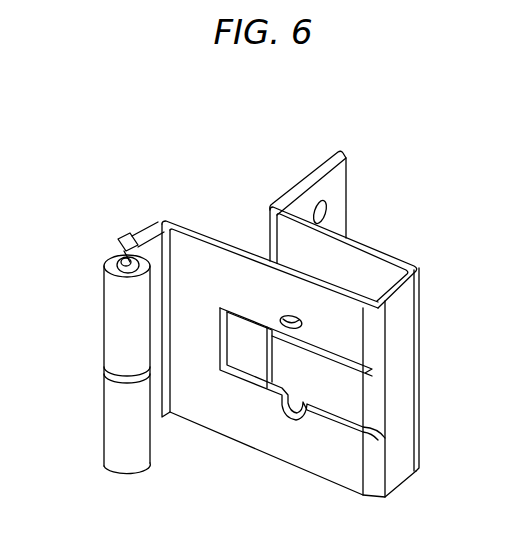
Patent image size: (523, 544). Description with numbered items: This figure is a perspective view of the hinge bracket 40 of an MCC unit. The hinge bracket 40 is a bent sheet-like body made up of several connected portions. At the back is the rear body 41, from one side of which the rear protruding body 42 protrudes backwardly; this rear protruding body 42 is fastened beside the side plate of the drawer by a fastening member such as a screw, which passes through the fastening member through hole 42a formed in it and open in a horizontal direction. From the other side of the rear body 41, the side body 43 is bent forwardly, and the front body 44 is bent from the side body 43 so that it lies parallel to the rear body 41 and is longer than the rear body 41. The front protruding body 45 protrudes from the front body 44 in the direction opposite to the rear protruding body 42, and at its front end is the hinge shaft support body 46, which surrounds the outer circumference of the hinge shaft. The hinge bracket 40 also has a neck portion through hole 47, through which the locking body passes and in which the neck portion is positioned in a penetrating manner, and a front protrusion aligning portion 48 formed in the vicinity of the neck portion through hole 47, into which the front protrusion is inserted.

The hinge bracket 40 is at (406, 476).
The rear body 41 is at (377, 272).
The rear protruding body 42 is at (327, 170).
The fastening member through hole 42a is at (327, 206).
The side body 43 is at (407, 378).
The front body 44 is at (342, 473).
The front protruding body 45 is at (154, 238).
The hinge shaft support body 46 is at (117, 312).
The neck portion through hole 47 is at (248, 358).
The front protrusion aligning portion 48 is at (284, 317).